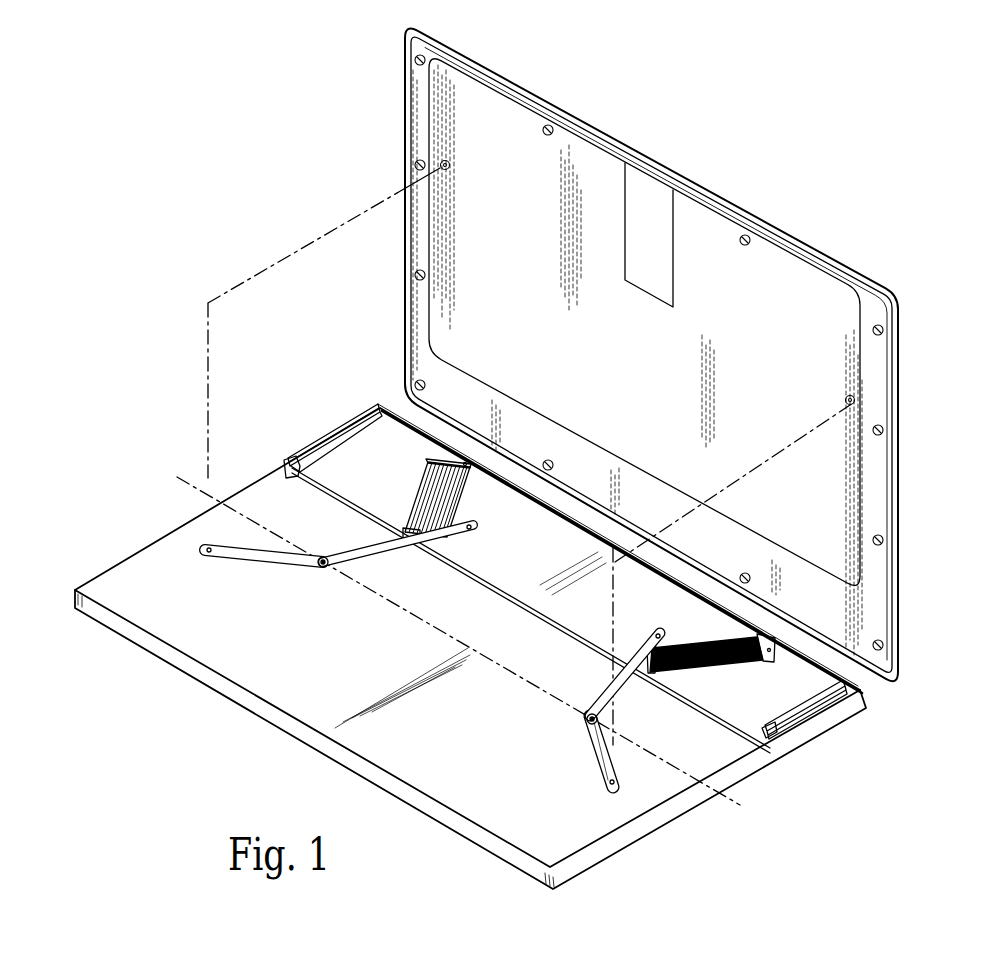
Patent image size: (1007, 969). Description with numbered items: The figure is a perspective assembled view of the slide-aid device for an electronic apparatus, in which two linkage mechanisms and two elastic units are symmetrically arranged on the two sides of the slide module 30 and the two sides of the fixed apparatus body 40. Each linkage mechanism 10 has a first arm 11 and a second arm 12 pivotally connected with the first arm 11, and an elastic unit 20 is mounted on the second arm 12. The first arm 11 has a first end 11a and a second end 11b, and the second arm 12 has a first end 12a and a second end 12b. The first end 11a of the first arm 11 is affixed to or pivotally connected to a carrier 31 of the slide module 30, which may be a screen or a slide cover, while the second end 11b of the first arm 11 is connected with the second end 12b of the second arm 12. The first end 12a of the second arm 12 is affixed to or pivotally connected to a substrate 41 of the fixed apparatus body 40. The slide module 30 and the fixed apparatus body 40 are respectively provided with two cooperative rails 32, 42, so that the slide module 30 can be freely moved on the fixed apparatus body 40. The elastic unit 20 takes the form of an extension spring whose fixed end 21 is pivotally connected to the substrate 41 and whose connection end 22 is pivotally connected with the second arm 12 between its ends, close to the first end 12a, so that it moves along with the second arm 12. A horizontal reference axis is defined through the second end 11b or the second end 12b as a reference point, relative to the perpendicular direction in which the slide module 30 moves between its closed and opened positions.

The linkage mechanism 10 is at (489, 624).
The first arm 11 is at (260, 562).
The first end of first arm 11a is at (207, 556).
The second end of first arm 11b is at (318, 565).
The second arm 12 is at (390, 552).
The first end of second arm 12a is at (462, 531).
The second end of second arm 12b is at (337, 568).
The elastic unit 20 is at (412, 490).
The fixed end 21 is at (440, 460).
The connection end 22 is at (410, 523).
The slide module 30 is at (845, 268).
The carrier 31 is at (830, 343).
The rail 32 is at (430, 128).
The fixed apparatus body 40 is at (282, 712).
The substrate 41 is at (505, 596).
The rail 42 is at (333, 431).